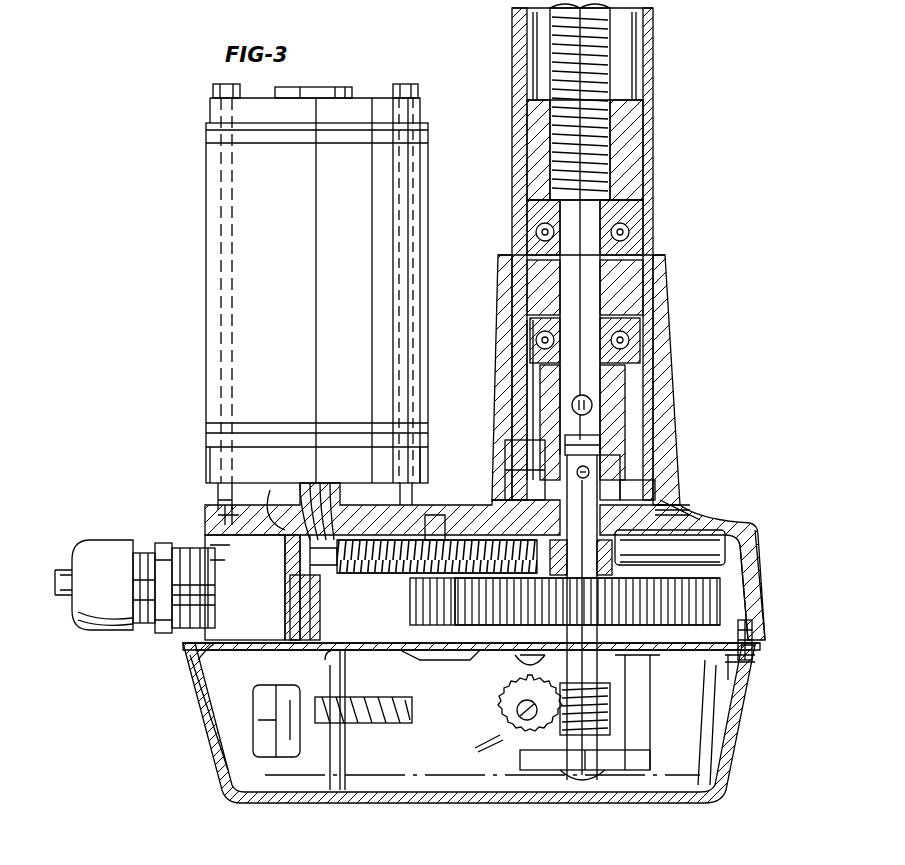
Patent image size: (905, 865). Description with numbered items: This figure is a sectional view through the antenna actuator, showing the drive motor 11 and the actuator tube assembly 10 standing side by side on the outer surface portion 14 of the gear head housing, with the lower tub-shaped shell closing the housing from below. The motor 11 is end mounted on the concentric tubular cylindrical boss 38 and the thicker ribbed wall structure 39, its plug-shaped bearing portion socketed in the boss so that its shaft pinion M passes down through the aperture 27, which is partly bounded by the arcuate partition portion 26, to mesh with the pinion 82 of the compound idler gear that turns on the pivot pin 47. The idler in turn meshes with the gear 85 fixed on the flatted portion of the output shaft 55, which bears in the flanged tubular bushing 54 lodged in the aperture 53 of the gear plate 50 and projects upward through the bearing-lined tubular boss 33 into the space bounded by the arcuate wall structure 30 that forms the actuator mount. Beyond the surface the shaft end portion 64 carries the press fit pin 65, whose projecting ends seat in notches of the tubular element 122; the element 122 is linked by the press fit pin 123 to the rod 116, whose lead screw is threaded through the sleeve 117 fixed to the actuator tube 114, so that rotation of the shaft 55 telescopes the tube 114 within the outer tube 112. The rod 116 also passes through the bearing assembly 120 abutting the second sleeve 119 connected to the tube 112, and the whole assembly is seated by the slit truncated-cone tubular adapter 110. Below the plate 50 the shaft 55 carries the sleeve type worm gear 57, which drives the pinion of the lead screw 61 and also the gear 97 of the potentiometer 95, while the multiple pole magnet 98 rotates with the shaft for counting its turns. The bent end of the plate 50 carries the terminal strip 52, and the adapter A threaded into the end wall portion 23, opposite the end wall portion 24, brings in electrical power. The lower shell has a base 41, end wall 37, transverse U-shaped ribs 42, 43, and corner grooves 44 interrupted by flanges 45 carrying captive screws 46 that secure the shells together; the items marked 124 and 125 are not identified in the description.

The actuator tube assembly 10 is at (660, 150).
The drive motor 11 is at (432, 182).
The surface portion 14 is at (705, 522).
The end wall portion 23 is at (200, 645).
The end wall portion 24 is at (760, 540).
The laterally centered arcuate portion 26 is at (285, 592).
The aperture 27 is at (270, 500).
The wall structure 30 is at (655, 490).
The tubular boss 33 is at (622, 558).
The end wall 37 is at (195, 712).
The tubular cylindrical boss 38 is at (275, 495).
The wall structure 39 is at (210, 505).
The base 41 is at (475, 803).
The U-shaped rib 42 is at (346, 755).
The U-shaped rib 43 is at (640, 740).
The vertically directed groove 44 is at (730, 716).
The flange 45 is at (768, 640).
The captive screw 46 is at (752, 670).
The pivot pin 47 is at (428, 652).
The gear plate 50 is at (372, 635).
The terminal strip 52 is at (255, 745).
The aperture 53 is at (515, 665).
The flanged tubular bushing 54 is at (630, 668).
The output shaft 55 is at (685, 500).
The sleeve type worm gear 57 is at (615, 702).
The lead screw 61 is at (398, 700).
The end portion 64 is at (610, 455).
The press fit pin 65 is at (595, 472).
The pinion 82 is at (365, 578).
The gear 85 is at (758, 578).
The potentiometer 95 is at (488, 712).
The gear 97 is at (500, 738).
The multiple pole magnet 98 is at (598, 790).
The tubular adapter 110 is at (670, 348).
The outer tube 112 is at (518, 42).
The actuator tube 114 is at (640, 46).
The rod 116 is at (605, 220).
The sleeve 117 is at (640, 112).
The second sleeve 119 is at (655, 252).
The bearing assembly 120 is at (632, 328).
The tubular element 122 is at (615, 393).
The press fit pin 123 is at (572, 403).
The coupling 124 is at (575, 445).
The bushing 125 is at (520, 455).
The adapter A is at (103, 540).
The pinion M is at (285, 560).